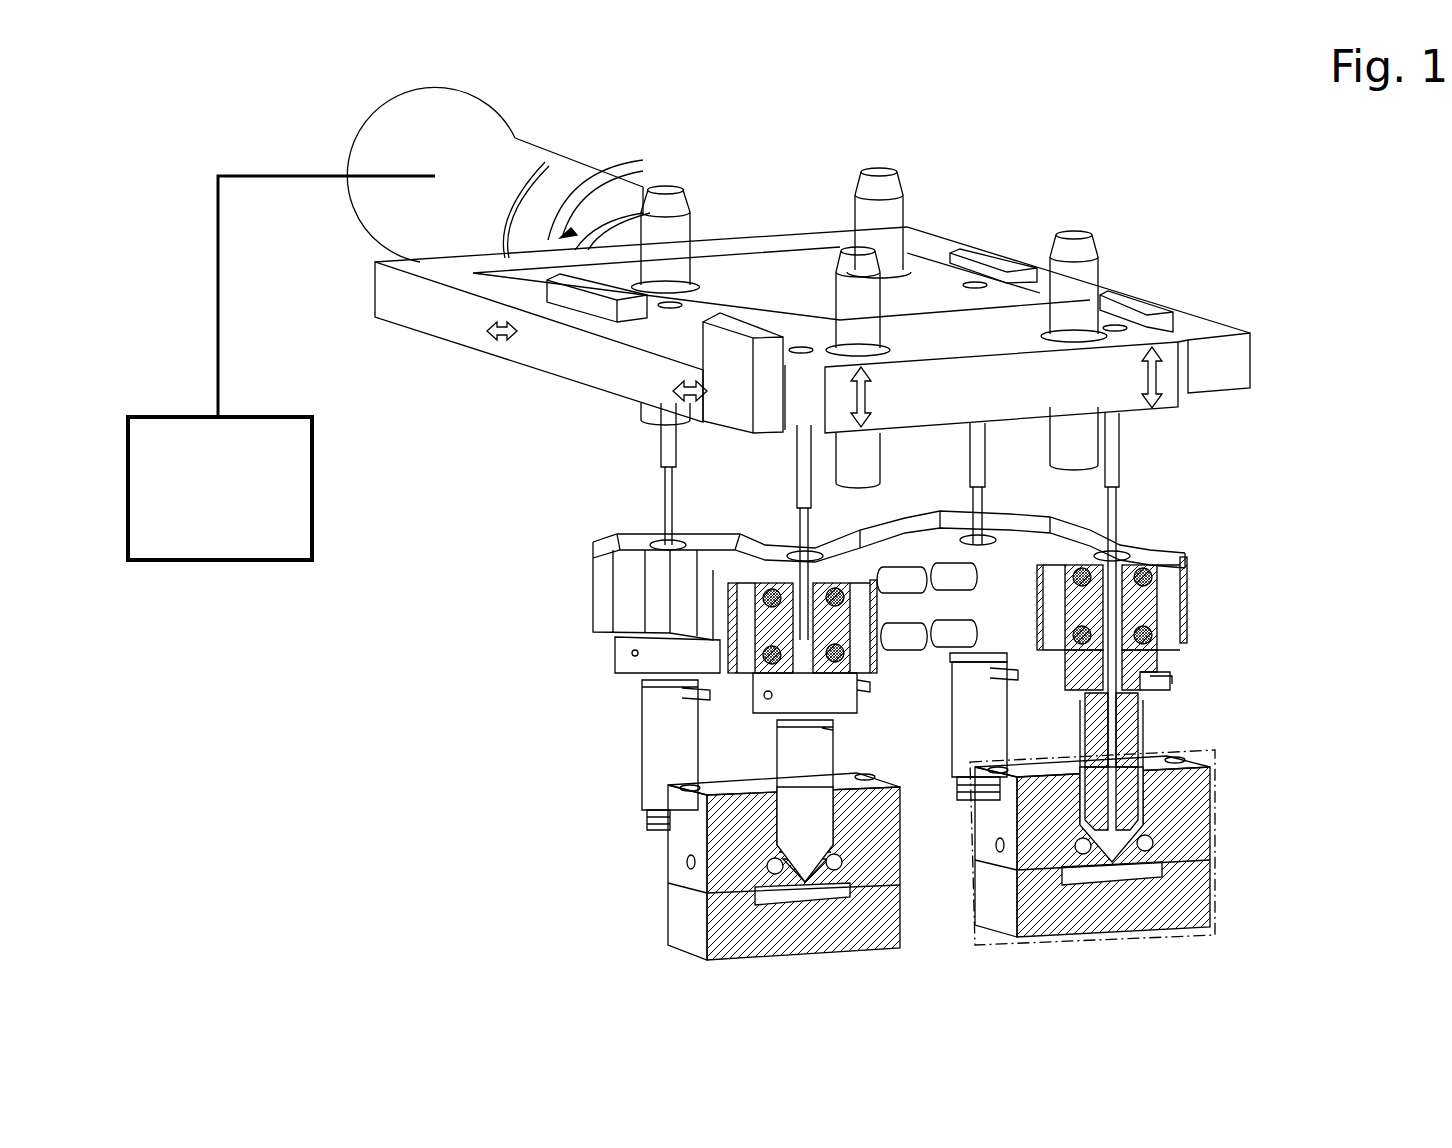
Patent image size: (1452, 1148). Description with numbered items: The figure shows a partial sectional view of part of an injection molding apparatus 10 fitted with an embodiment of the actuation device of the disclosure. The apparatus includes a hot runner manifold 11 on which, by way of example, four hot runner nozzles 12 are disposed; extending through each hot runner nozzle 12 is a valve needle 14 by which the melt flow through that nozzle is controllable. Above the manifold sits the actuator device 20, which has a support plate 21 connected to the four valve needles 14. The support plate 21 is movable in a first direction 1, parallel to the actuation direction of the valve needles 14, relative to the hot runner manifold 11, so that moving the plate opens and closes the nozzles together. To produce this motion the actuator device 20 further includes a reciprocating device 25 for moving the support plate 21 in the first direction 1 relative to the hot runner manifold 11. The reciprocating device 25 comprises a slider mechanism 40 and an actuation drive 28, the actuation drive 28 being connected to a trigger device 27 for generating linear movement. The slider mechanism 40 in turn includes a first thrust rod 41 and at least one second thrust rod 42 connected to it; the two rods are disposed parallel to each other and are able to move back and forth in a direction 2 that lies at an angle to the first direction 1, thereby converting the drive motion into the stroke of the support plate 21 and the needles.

The first direction 1 is at (864, 398).
The direction 2 is at (487, 333).
The injection molding apparatus 10 is at (344, 803).
The hot runner manifold 11 is at (1143, 603).
The hot runner nozzle 12 is at (1120, 713).
The valve needle 14 is at (1115, 510).
The actuator device 20 is at (826, 642).
The support plate 21 is at (1074, 423).
The reciprocating device 25 is at (985, 170).
The trigger device 27 is at (232, 507).
The actuation drive 28 is at (490, 178).
The slider mechanism 40 is at (867, 293).
The first thrust rod 41 is at (1232, 365).
The second thrust rod 42 is at (580, 381).